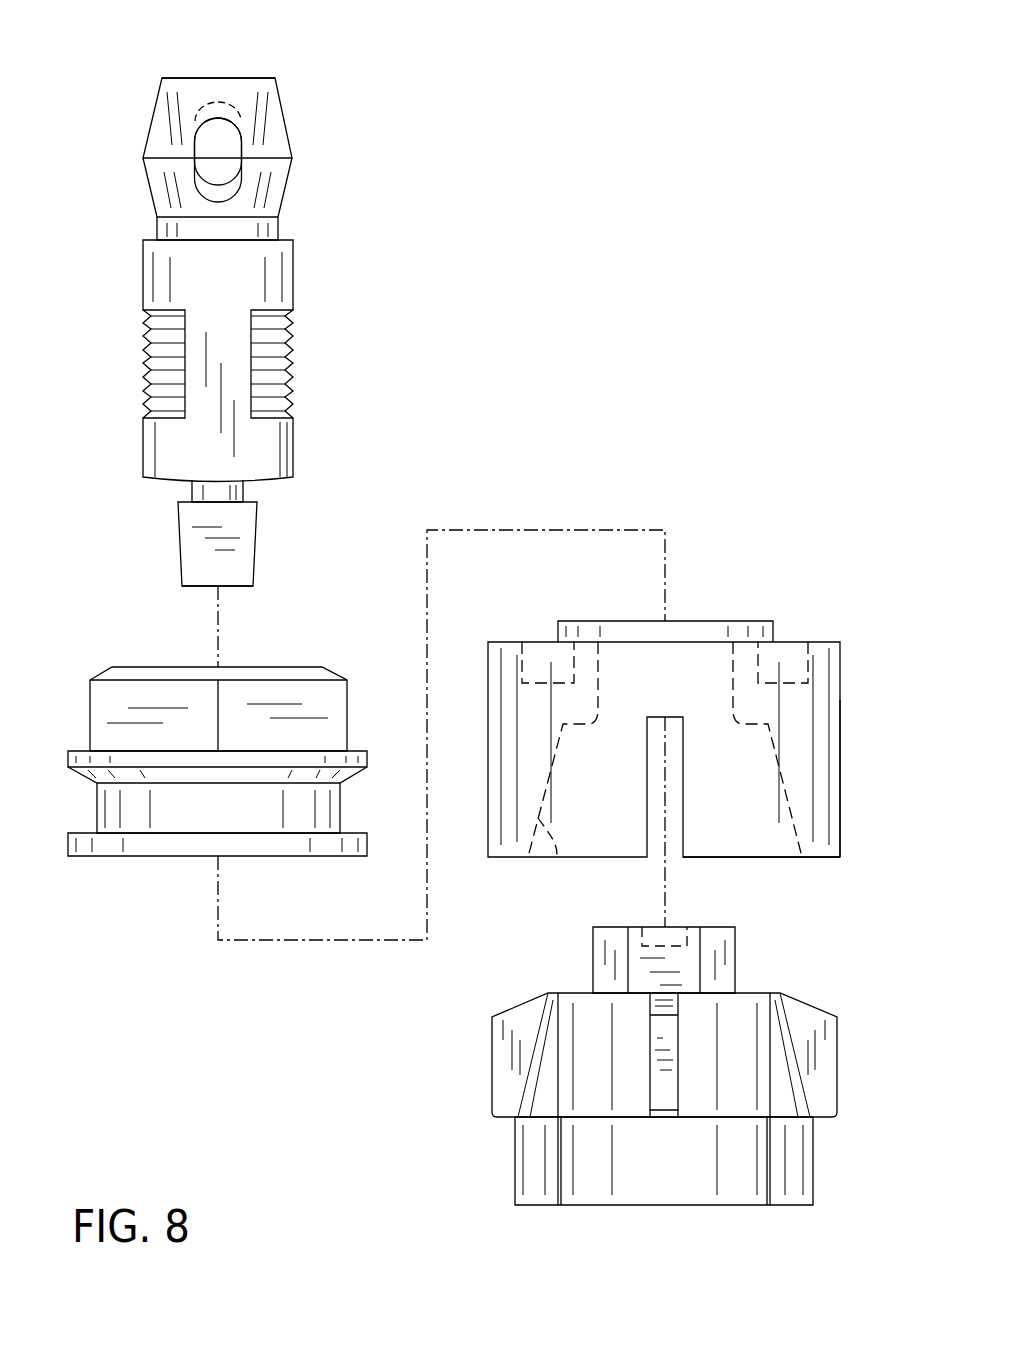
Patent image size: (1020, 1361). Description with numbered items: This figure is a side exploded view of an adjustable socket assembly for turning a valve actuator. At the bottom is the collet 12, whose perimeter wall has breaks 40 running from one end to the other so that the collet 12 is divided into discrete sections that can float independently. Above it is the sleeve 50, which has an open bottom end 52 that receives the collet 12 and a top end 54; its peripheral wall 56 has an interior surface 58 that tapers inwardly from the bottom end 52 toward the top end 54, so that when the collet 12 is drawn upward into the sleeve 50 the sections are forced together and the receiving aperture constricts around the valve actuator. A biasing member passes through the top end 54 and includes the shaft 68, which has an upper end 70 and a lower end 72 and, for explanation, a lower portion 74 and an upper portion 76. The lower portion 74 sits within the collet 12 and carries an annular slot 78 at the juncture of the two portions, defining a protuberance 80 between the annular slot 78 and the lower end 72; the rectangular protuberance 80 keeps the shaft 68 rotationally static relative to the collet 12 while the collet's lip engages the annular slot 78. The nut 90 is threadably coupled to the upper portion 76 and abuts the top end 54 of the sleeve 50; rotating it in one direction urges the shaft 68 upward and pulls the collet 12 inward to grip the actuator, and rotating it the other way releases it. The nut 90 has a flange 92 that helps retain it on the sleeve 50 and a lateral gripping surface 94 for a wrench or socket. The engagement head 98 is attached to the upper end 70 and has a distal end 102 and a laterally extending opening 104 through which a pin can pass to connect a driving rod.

The collet 12 is at (452, 1068).
The breaks 40 is at (558, 1165).
The sleeve 50 is at (855, 716).
The bottom end 52 is at (816, 862).
The top end 54 is at (818, 642).
The peripheral wall 56 is at (840, 773).
The interior surface 58 is at (556, 860).
The shaft 68 is at (360, 302).
The upper end 70 is at (283, 233).
The lower end 72 is at (235, 587).
The lower portion 74 is at (145, 510).
The upper portion 76 is at (84, 343).
The annular slot 78 is at (280, 492).
The protuberance 80 is at (230, 538).
The nut 90 is at (58, 810).
The flange 92 is at (62, 850).
The lateral gripping surface 94 is at (127, 708).
The engagement head 98 is at (98, 115).
The distal end 102 is at (217, 78).
The opening 104 is at (198, 165).